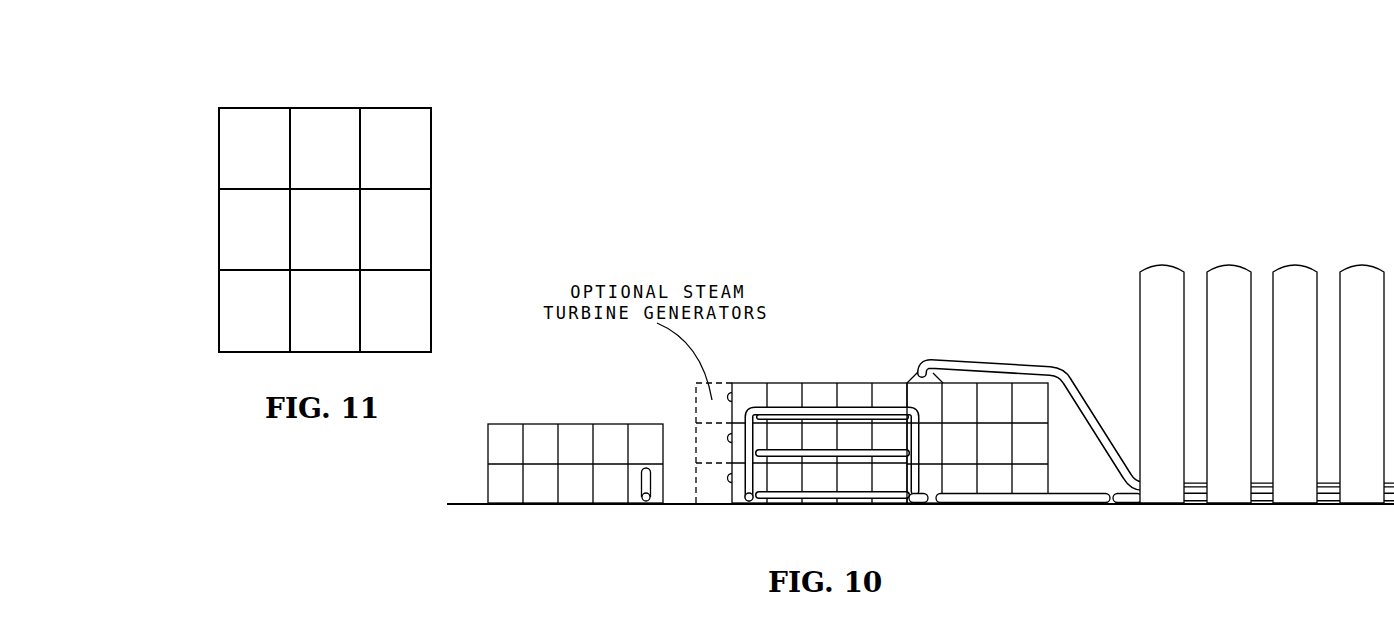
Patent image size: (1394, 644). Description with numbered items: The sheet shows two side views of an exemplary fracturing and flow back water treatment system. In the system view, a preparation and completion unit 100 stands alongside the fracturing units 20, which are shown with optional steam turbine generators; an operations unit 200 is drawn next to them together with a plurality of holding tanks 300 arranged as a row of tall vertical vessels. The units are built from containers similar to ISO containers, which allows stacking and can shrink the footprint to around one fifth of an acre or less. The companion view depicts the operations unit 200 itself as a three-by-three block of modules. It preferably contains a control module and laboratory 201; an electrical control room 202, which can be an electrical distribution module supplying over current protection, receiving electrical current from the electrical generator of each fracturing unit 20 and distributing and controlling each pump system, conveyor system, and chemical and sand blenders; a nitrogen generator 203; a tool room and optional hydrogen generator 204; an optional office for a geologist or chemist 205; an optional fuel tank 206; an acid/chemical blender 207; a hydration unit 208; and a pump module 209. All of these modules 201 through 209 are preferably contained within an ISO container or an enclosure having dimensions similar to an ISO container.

In FIG. 10, the fracturing unit 20 is at (849, 387).
In FIG. 10, the preparation and completion unit 100 is at (584, 420).
In FIG. 11, the operations unit 200 is at (418, 87).
In FIG. 10, the operations unit 200 is at (975, 379).
In FIG. 11, the control module and laboratory 201 is at (236, 160).
In FIG. 11, the electrical control room 202 is at (306, 160).
In FIG. 11, the nitrogen generator 203 is at (377, 160).
In FIG. 11, the tool room and optional hydrogen generator 204 is at (236, 242).
In FIG. 11, the optional office for a geologist/chemist 205 is at (306, 242).
In FIG. 11, the optional fuel tank 206 is at (377, 242).
In FIG. 11, the acid/chemical blender 207 is at (236, 324).
In FIG. 11, the hydration unit 208 is at (306, 324).
In FIG. 11, the pump module 209 is at (377, 324).
In FIG. 10, the holding tank 300 is at (1151, 256).